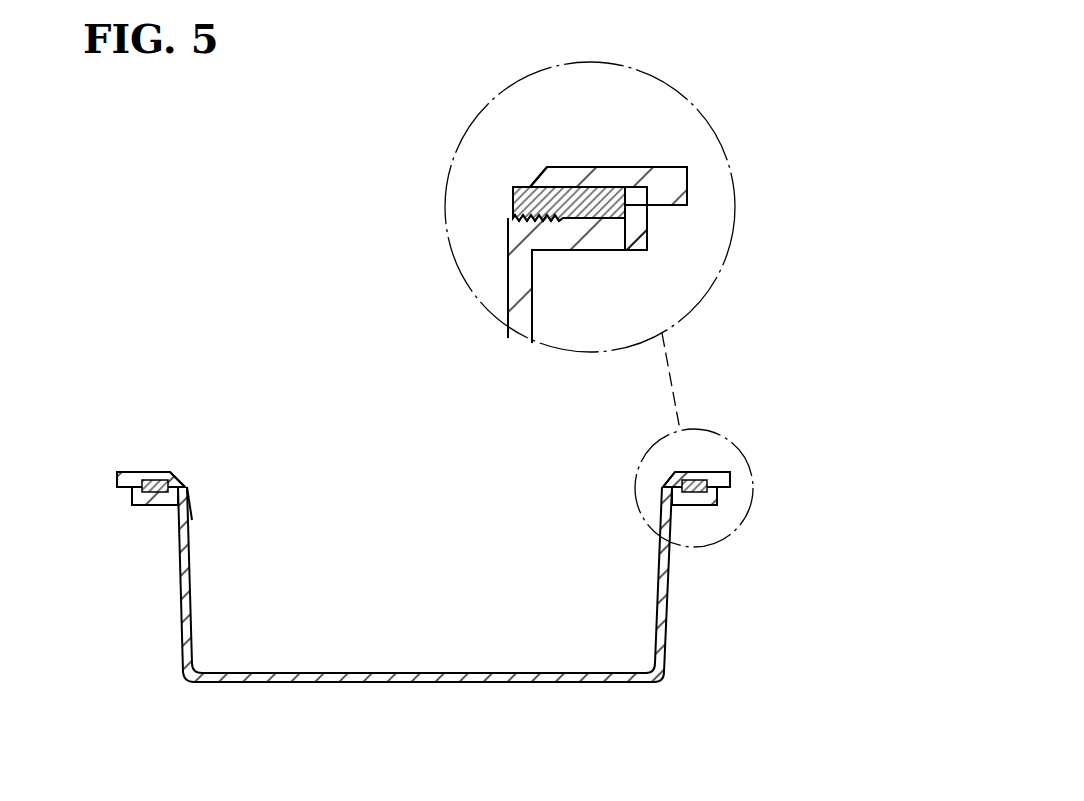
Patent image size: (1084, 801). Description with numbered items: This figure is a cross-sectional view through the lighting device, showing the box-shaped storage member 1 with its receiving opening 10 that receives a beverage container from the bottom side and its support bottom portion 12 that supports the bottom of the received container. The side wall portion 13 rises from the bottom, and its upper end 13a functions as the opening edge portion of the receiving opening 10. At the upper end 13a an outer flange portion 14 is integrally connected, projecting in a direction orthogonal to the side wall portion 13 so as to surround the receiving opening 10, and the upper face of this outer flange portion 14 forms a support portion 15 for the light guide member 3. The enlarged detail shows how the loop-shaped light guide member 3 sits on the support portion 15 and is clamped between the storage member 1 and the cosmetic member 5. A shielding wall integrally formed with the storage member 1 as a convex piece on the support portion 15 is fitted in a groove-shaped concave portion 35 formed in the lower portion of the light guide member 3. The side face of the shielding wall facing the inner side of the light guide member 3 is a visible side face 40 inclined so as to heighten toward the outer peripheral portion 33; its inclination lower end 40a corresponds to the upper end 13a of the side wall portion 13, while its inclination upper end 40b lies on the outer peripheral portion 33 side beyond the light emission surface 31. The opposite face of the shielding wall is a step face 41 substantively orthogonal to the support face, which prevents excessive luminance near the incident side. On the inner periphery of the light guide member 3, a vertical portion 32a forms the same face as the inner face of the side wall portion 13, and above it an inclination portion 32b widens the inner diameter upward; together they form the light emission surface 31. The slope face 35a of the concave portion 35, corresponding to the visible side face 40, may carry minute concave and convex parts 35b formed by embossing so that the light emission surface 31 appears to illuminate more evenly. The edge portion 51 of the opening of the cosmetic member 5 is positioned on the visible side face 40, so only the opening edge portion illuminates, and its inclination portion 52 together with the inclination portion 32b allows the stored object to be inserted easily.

The storage member 1 is at (667, 615).
The receiving opening 10 is at (355, 513).
The support bottom portion 12 is at (442, 683).
The side wall portion 13 is at (178, 600).
The upper end of the side wall portion 13a is at (514, 216).
The outer flange portion 14 is at (148, 506).
The support portion 15 is at (160, 508).
The light guide member 3 is at (152, 480).
The light emission surface 31 is at (185, 487).
The vertical portion 32a is at (513, 218).
The inclination portion 32b is at (518, 197).
The outer peripheral portion 33 is at (625, 205).
The concave portion 35 is at (552, 222).
The slope face 35a is at (551, 218).
The minute concave and convex parts 35b is at (526, 218).
The visible side face 40 is at (511, 225).
The inclination lower end 40a is at (511, 222).
The inclination upper end 40b is at (565, 187).
The step face 41 is at (578, 222).
The cosmetic member 5 is at (620, 167).
The edge portion 51 is at (528, 187).
The inclination portion 52 is at (538, 177).